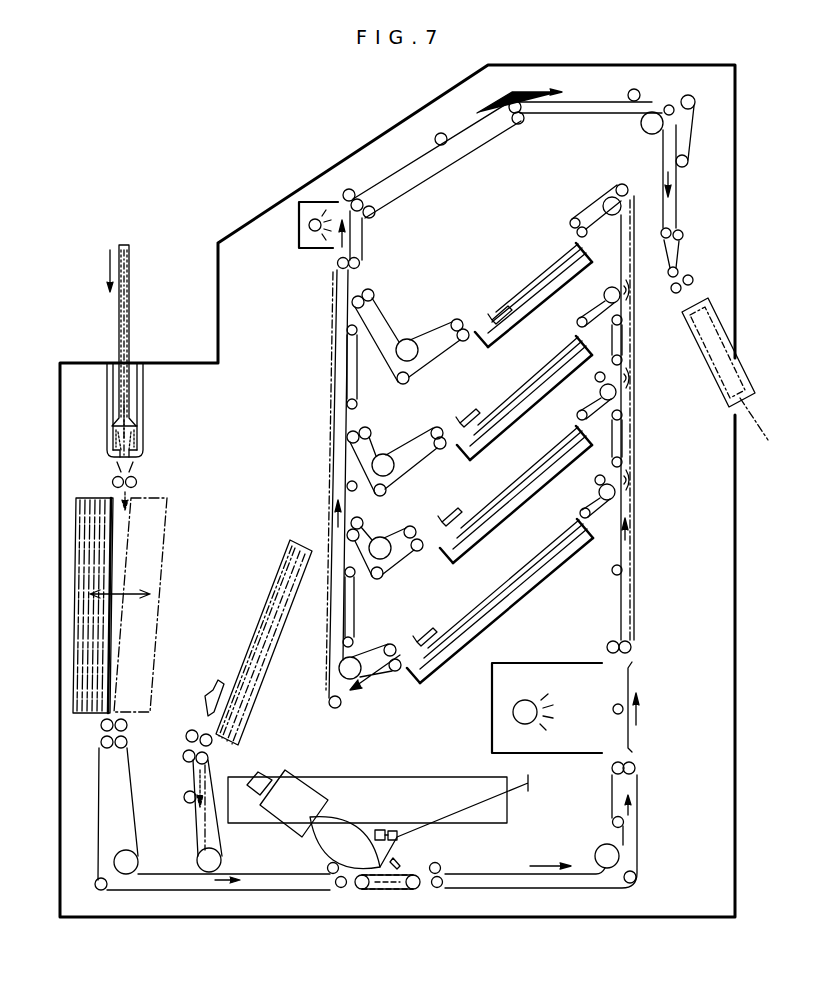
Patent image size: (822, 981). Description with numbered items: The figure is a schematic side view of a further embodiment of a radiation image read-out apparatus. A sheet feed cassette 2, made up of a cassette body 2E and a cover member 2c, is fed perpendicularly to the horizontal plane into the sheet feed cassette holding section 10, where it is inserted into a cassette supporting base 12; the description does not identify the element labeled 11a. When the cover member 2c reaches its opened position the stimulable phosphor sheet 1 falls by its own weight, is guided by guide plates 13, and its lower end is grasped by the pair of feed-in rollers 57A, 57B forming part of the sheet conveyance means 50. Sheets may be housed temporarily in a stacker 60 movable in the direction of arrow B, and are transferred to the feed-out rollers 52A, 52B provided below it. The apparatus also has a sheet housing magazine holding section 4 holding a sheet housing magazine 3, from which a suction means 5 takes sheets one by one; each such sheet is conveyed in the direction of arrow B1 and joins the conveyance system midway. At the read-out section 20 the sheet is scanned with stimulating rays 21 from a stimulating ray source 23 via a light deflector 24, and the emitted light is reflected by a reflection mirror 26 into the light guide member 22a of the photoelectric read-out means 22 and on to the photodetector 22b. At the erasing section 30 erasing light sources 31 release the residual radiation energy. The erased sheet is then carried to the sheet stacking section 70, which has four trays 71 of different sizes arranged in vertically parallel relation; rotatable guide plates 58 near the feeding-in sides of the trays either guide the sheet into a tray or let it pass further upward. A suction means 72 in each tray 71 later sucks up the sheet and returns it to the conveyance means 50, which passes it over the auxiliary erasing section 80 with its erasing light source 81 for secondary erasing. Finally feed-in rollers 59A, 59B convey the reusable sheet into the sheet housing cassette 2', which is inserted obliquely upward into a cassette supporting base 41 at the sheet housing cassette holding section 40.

The stimulable phosphor sheet 1 is at (128, 270).
The sheet feed cassette 2 is at (137, 352).
The cassette body 2E is at (128, 345).
The cover member 2c is at (137, 440).
The sheet housing cassette 2' is at (757, 405).
The sheet feed cassette holding section 10 is at (96, 360).
The cassette supporting base 12 is at (138, 392).
The guide cup 11a is at (137, 420).
The guide plates 13 is at (135, 470).
The feed-in roller 57A is at (114, 482).
The feed-in roller 57B is at (137, 483).
The stacker 60 is at (70, 499).
The arrow B is at (133, 592).
The sheet housing magazine 3 is at (298, 542).
The sheet housing magazine holding section 4 is at (249, 598).
The suction means 5 is at (214, 684).
The arrow B1 is at (210, 790).
The read-out section 20 is at (348, 770).
The stimulating rays 21 is at (400, 835).
The photoelectric read-out means 22 is at (300, 812).
The light guide member 22a is at (340, 832).
The photodetector 22b is at (297, 782).
The stimulating ray source 23 is at (414, 785).
The light deflector 24 is at (395, 830).
The reflection mirror 26 is at (402, 863).
The erasing section 30 is at (490, 712).
The erasing light source 31 is at (526, 700).
The sheet conveyance means 50 is at (395, 170).
The feed-out roller 52A is at (392, 643).
The feed-out roller 52B is at (396, 672).
The sheet stacking section 70 is at (500, 457).
The tray 71 is at (528, 318).
The suction means 72 is at (500, 302).
The guide plate 58 is at (634, 292).
The feed-in roller 59A is at (691, 276).
The feed-in roller 59B is at (683, 292).
The sheet housing cassette holding section 40 is at (722, 290).
The cassette supporting base 41 is at (730, 342).
The auxiliary erasing section 80 is at (290, 222).
The erasing light source 81 is at (313, 218).